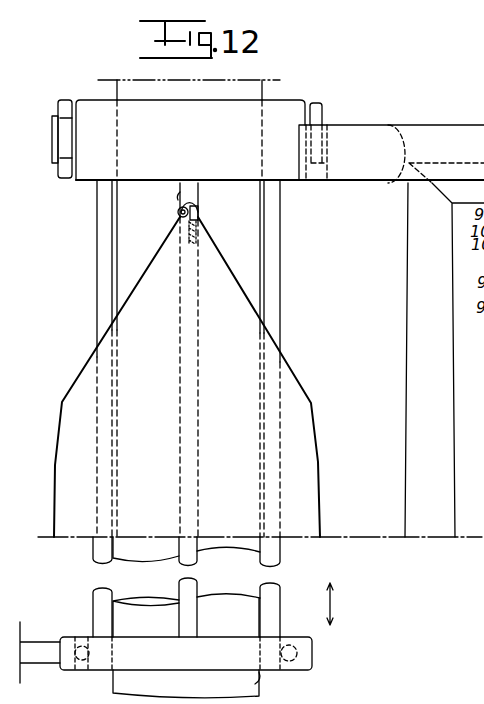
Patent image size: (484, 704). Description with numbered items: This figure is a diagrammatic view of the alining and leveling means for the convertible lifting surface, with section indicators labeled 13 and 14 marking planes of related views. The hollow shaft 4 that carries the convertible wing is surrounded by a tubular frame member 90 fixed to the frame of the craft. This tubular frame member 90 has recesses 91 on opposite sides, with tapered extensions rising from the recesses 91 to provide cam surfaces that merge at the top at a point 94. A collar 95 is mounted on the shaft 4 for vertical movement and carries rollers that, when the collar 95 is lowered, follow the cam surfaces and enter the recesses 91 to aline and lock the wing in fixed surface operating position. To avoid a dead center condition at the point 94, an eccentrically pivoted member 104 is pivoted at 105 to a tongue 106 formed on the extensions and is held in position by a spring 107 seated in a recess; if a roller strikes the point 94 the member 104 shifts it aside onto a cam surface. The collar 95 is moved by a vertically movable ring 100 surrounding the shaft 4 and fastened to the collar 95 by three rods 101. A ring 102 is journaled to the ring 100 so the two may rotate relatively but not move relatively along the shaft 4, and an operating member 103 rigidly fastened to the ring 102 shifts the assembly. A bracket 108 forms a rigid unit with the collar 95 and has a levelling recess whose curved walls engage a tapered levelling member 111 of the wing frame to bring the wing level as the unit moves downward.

The collar 95 is at (87, 106).
The merging point of cam surfaces 94 is at (180, 198).
The tongue 106 is at (199, 200).
The eccentrically pivoted member 104 is at (198, 210).
The pivot 105 is at (178, 212).
The spring 107 is at (198, 232).
The bracket 108 is at (357, 173).
The rods 101 is at (275, 273).
The levelling member 111 is at (416, 358).
The recesses 91 is at (62, 422).
The tubular frame member 90 is at (309, 505).
The vertically movable ring 100 is at (103, 663).
The ring 102 is at (67, 665).
The operating member 103 is at (30, 643).
The hollow shaft 4 is at (260, 674).
The section line 13- 13 is at (432, 118).
The section line 14- 14 is at (47, 140).